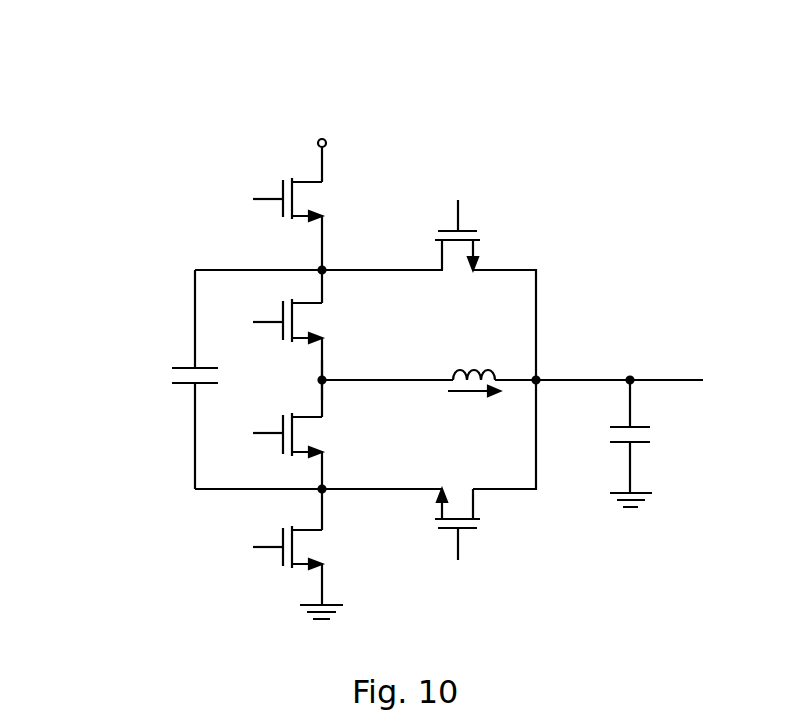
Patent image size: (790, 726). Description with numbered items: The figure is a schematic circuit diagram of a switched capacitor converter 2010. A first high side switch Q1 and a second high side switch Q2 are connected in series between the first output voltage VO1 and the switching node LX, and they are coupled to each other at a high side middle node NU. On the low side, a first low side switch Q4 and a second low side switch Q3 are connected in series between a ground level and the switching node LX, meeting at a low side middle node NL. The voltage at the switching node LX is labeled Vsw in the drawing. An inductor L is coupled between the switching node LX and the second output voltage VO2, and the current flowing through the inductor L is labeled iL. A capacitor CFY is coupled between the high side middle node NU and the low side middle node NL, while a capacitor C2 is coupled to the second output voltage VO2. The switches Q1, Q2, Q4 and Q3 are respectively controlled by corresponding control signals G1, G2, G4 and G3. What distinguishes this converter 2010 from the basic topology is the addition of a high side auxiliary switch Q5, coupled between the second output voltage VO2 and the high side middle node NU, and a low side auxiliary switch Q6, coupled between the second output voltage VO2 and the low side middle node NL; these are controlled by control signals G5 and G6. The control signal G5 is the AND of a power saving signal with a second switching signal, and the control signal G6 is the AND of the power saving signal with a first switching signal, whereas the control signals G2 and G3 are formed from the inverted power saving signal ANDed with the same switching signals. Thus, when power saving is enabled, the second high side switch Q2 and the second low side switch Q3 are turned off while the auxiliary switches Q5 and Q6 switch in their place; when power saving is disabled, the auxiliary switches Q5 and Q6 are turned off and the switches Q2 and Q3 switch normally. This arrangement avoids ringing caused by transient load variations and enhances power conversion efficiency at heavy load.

The switched capacitor converter 2010 is at (137, 63).
The first output voltage VO1 is at (321, 129).
The second output voltage VO2 is at (661, 367).
The first high side switch Q1 is at (326, 199).
The second high side switch Q2 is at (326, 321).
The second low side switch Q3 is at (326, 435).
The first low side switch Q4 is at (327, 547).
The high side auxiliary switch Q5 is at (478, 249).
The low side auxiliary switch Q6 is at (478, 516).
The control signal G1 is at (248, 202).
The control signal G2 is at (248, 324).
The control signal G3 is at (248, 435).
The control signal G4 is at (249, 547).
The control signal G5 is at (458, 202).
The control signal G6 is at (459, 559).
The high side middle node NU is at (310, 257).
The low side middle node NL is at (314, 503).
The switching node LX is at (297, 380).
The switching voltage Vsw is at (512, 366).
The capacitor CFY is at (167, 379).
The inductor L is at (474, 361).
The inductor current iL is at (474, 402).
The capacitor C2 is at (611, 443).